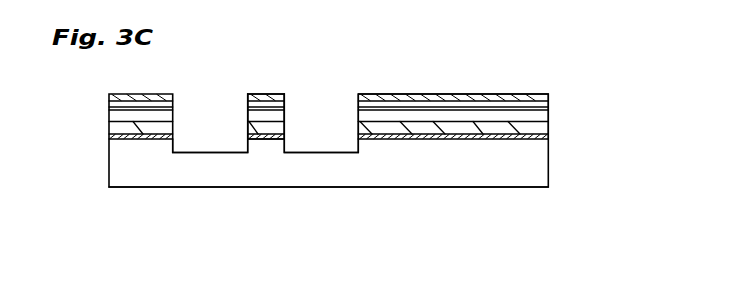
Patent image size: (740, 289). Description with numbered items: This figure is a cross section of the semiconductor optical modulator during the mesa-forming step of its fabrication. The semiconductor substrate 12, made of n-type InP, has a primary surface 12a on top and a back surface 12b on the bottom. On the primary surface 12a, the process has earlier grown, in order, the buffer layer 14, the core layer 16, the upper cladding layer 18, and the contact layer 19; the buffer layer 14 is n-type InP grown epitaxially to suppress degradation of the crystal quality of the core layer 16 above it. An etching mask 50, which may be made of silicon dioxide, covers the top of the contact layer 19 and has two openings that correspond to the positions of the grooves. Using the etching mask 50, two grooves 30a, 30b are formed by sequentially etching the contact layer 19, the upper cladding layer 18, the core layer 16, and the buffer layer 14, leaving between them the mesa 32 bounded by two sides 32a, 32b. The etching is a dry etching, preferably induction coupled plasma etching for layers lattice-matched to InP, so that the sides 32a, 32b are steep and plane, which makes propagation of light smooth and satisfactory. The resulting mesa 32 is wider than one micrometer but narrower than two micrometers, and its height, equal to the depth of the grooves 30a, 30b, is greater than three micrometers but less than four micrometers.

The semiconductor substrate 12 is at (543, 163).
The primary surface 12a is at (546, 137).
The back surface 12b is at (537, 187).
The buffer layer 14 is at (474, 139).
The core layer 16 is at (508, 127).
The upper cladding layer 18 is at (545, 116).
The contact layer 19 is at (547, 102).
The etching mask 50 is at (453, 94).
The mesa 32 is at (264, 94).
The side of the mesa 32a is at (246, 112).
The side of the mesa 32b is at (285, 113).
The groove 30a is at (187, 155).
The groove 30b is at (333, 155).